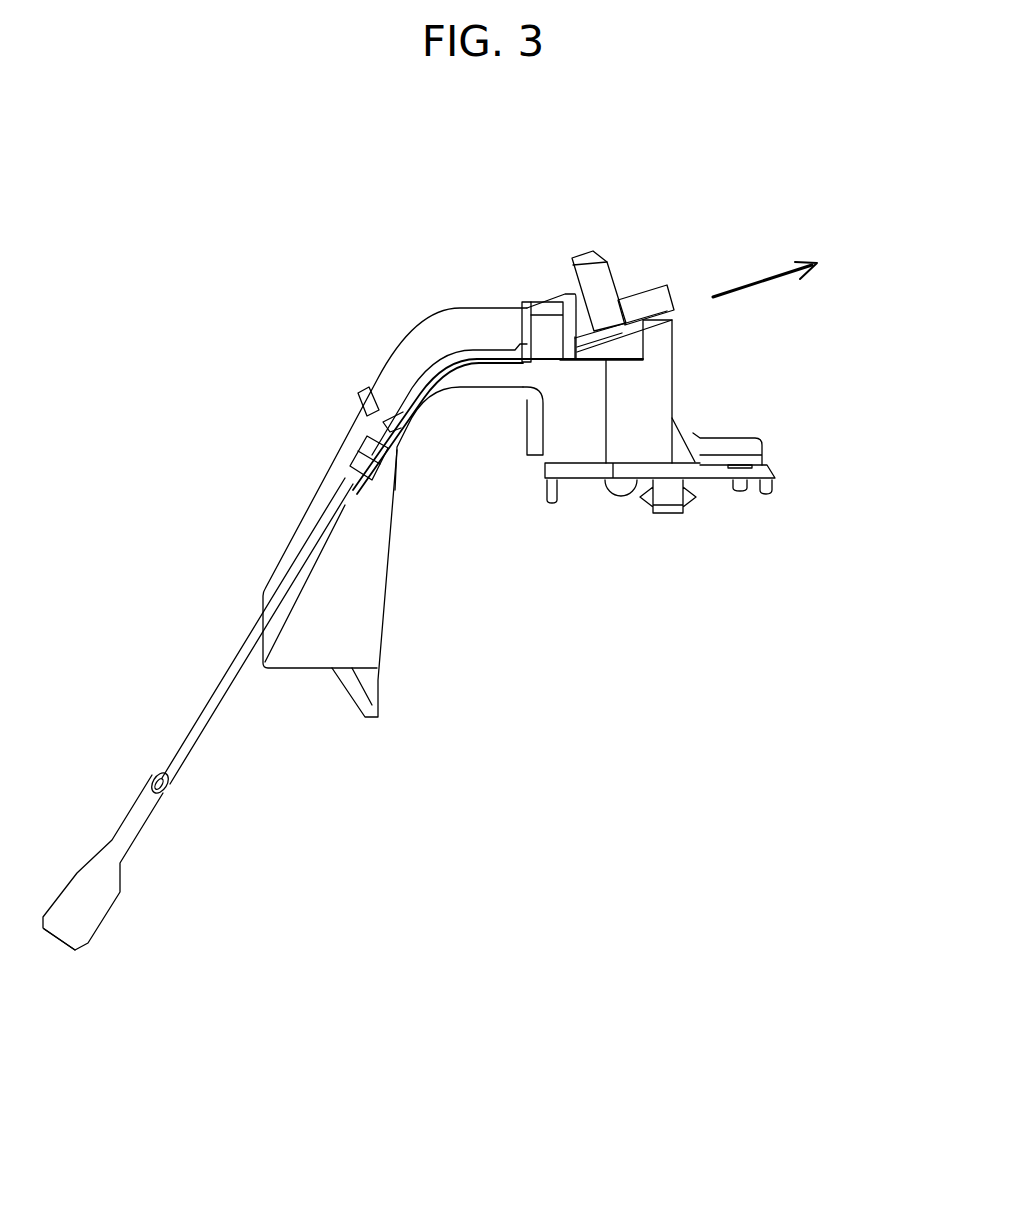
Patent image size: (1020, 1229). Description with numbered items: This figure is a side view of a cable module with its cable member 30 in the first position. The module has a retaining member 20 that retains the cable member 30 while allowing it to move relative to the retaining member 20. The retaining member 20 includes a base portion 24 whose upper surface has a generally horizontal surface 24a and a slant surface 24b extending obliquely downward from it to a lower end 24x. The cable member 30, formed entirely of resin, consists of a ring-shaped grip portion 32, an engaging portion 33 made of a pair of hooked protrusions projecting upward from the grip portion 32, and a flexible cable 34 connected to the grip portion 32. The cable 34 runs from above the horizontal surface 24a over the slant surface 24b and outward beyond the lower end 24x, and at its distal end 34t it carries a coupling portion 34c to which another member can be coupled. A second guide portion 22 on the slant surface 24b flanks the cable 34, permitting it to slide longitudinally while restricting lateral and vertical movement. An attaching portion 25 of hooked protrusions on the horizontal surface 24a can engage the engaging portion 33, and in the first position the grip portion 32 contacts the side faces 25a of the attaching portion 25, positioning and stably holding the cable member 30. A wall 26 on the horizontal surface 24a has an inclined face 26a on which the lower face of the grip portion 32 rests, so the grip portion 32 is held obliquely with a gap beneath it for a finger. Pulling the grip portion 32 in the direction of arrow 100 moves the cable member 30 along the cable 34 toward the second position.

The arrow 100 is at (767, 283).
The retaining member 20 is at (608, 513).
The second guide portion 22 is at (397, 465).
The base portion 24 is at (460, 192).
The horizontal surface 24a is at (488, 352).
The slant surface 24b is at (418, 390).
The lower end of the slant surface 24x is at (367, 487).
The attaching portion 25 is at (548, 340).
The side faces 25a is at (598, 327).
The wall 26 is at (660, 347).
The inclined face 26a is at (600, 325).
The cable member 30 is at (198, 762).
The grip portion 32 is at (660, 297).
The engaging portion 33 is at (593, 277).
The cable 34 is at (213, 715).
The coupling portion 34c is at (98, 894).
The distal end 34t is at (57, 943).